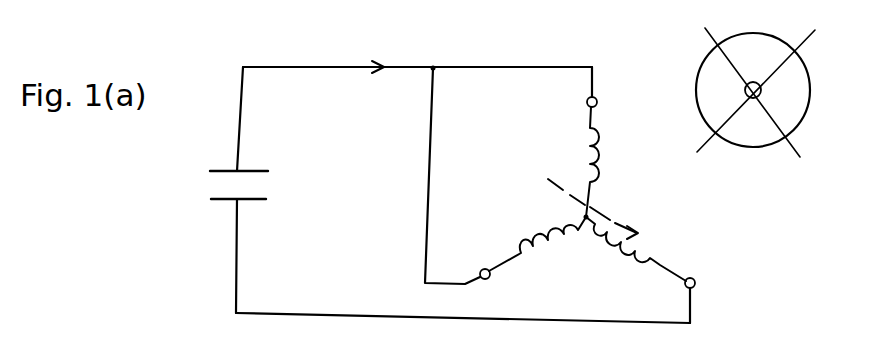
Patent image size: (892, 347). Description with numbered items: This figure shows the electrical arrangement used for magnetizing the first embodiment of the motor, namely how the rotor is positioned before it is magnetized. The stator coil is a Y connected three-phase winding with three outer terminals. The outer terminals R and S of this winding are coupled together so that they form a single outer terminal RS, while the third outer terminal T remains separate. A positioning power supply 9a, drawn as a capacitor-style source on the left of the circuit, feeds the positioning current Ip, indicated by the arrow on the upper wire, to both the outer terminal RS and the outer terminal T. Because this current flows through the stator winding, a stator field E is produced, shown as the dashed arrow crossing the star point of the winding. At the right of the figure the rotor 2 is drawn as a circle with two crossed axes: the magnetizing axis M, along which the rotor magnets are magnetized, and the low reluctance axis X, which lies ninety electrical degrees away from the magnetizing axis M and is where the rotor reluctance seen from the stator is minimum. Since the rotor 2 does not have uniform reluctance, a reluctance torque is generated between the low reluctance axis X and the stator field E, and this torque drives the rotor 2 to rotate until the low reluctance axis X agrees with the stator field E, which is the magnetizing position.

The positioning power supply 9a is at (209, 190).
The rotor 2 is at (772, 107).
The positioning current Ip is at (417, 53).
The outer terminal RS is at (422, 52).
The outer terminal R is at (578, 90).
The outer terminal S is at (457, 176).
The outer terminal T is at (705, 293).
The stator field E is at (581, 205).
The magnetizing axis M is at (747, 106).
The low reluctance axis X is at (757, 107).